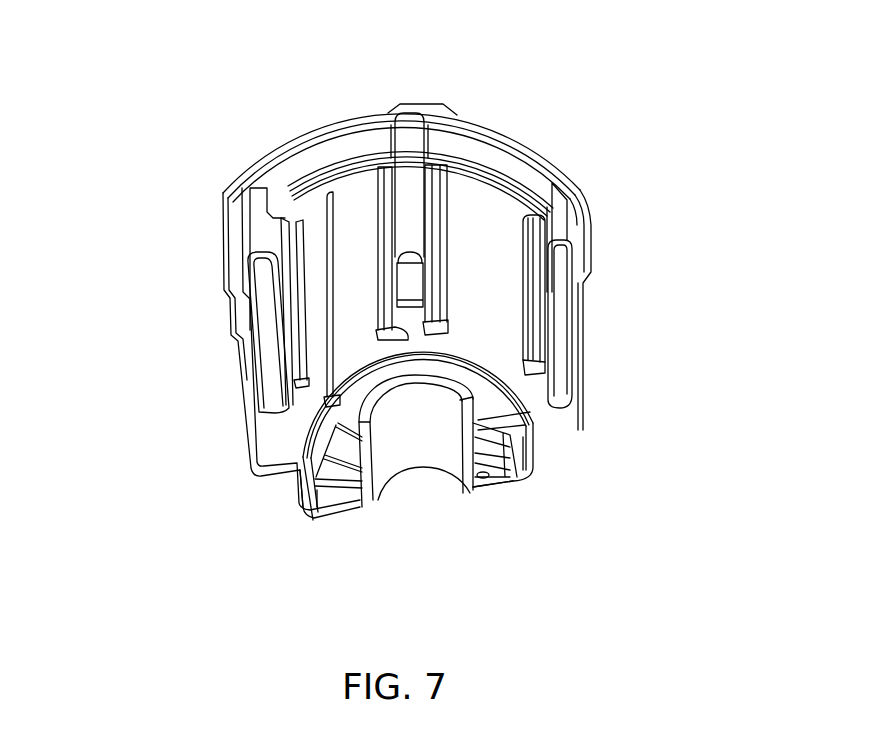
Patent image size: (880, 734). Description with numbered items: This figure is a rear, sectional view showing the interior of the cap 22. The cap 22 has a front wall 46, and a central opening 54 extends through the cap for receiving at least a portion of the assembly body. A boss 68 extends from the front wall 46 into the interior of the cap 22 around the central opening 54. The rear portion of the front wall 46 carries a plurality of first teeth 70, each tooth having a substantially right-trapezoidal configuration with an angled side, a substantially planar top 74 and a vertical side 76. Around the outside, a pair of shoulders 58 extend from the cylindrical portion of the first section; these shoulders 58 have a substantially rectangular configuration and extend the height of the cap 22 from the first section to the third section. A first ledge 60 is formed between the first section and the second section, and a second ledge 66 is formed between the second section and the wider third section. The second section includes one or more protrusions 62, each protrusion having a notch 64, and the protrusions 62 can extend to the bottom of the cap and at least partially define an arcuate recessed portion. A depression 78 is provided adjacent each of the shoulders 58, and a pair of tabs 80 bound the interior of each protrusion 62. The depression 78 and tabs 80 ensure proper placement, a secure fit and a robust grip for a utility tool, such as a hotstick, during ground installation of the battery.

The cap 22 is at (143, 232).
The front wall 46 is at (502, 490).
The central opening 54 is at (423, 478).
The shoulders 58 is at (320, 247).
The first ledge 60 is at (510, 437).
The protrusions 62 is at (407, 182).
The notch 64 is at (412, 283).
The second ledge 66 is at (493, 175).
The boss 68 is at (367, 447).
The first teeth 70 is at (508, 466).
The substantially planar top 74 is at (505, 440).
The vertical side 76 is at (507, 454).
The depression 78 is at (318, 380).
The tabs 80 is at (555, 263).